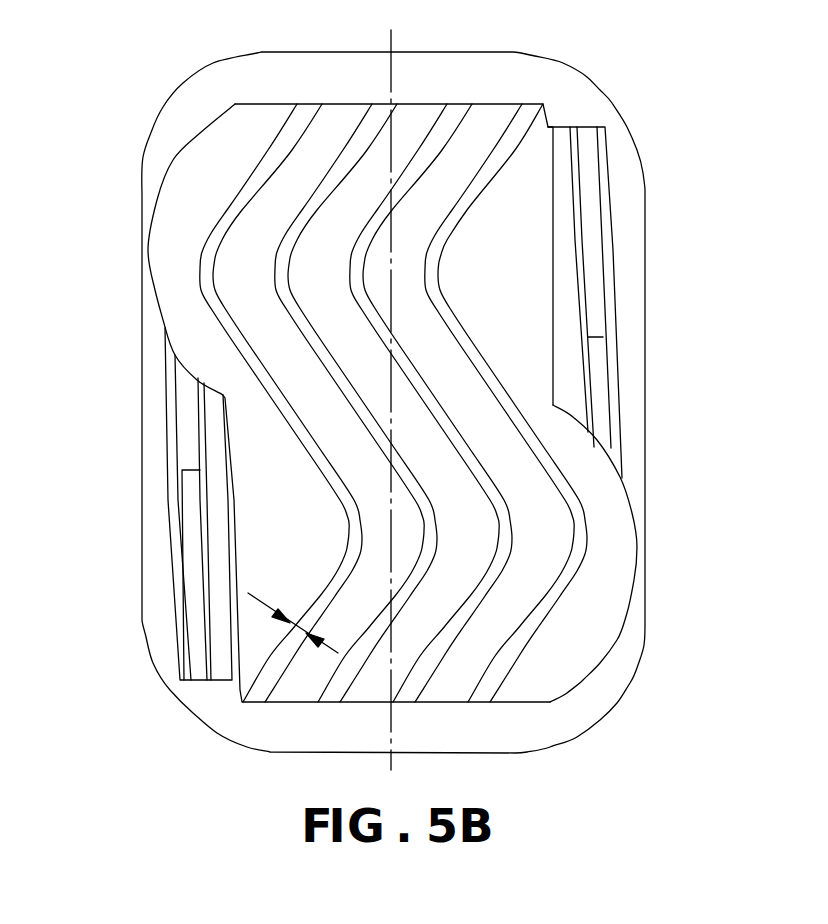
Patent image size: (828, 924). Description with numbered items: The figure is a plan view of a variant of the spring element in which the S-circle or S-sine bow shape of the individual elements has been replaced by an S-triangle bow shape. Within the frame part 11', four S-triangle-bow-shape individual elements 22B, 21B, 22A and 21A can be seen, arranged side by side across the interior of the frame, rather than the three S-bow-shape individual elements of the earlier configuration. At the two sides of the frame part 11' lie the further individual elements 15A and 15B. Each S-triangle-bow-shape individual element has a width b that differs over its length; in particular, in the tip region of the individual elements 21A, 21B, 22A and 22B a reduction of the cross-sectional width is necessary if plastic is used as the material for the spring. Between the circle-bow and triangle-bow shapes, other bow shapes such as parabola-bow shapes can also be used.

The frame part 11' is at (393, 379).
The further individual element 15A is at (590, 209).
The further individual element 15B is at (197, 580).
The S-triangle-bow-shape individual element 21A is at (493, 373).
The S-triangle-bow-shape individual element 21B is at (293, 297).
The S-triangle-bow-shape individual element 22A is at (375, 308).
The S-triangle-bow-shape individual element 22B is at (213, 232).
The width b is at (293, 614).